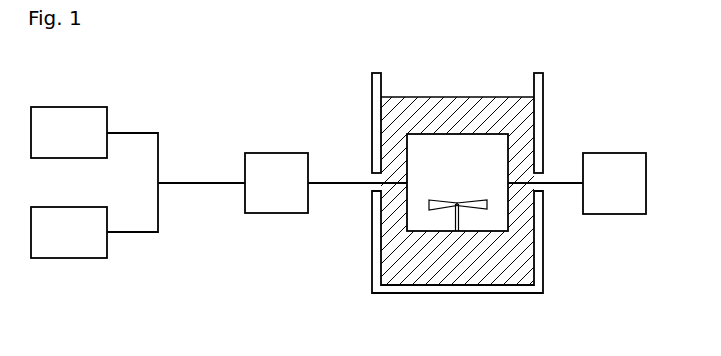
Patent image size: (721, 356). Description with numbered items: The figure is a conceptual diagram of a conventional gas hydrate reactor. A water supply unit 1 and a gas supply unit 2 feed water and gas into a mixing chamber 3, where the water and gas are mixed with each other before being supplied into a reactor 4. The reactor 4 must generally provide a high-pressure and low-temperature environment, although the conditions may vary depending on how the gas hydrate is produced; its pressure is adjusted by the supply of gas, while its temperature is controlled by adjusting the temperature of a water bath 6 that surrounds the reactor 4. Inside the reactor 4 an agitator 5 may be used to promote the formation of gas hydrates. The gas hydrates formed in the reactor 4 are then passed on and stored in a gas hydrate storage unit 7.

The water supply unit 1 is at (71, 117).
The gas supply unit 2 is at (65, 250).
The mixing chamber 3 is at (279, 158).
The reactor 4 is at (463, 150).
The agitator 5 is at (456, 225).
The water bath 6 is at (409, 107).
The gas hydrate storage unit 7 is at (617, 160).